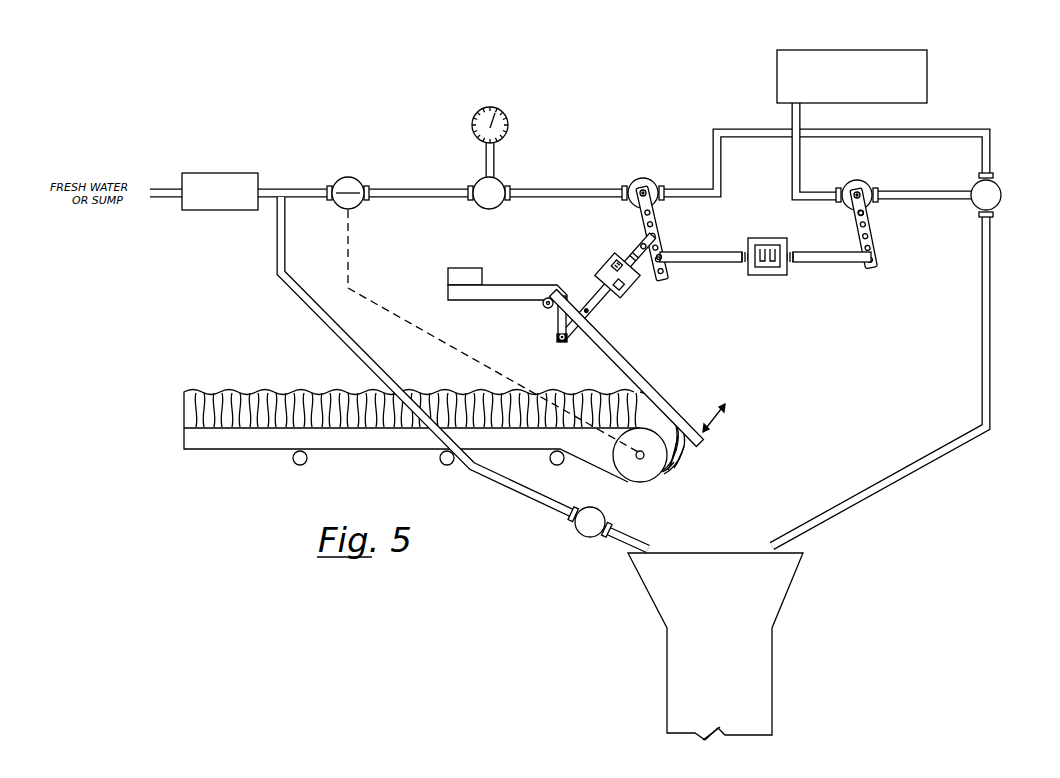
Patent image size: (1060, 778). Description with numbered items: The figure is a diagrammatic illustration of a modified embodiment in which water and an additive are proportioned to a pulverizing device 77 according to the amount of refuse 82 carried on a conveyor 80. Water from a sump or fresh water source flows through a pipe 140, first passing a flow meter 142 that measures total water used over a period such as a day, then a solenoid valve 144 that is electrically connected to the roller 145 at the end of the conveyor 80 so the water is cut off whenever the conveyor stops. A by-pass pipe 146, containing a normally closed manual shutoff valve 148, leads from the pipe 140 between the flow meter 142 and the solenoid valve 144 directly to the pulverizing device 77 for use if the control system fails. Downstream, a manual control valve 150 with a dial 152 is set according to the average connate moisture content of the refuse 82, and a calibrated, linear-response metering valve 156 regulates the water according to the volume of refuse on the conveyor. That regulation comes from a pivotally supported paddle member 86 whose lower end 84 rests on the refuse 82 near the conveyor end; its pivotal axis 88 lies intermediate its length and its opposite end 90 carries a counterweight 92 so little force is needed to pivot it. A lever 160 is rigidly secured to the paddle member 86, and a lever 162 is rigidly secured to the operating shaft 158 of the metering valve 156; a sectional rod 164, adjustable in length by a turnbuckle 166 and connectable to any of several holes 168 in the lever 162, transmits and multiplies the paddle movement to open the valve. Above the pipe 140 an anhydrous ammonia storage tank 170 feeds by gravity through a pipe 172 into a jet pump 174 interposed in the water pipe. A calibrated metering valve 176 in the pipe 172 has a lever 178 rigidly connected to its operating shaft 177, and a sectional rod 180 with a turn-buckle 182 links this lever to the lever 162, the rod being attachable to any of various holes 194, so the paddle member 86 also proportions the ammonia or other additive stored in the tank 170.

The pulverizing device 77 is at (644, 572).
The conveyor 80 is at (327, 450).
The refuse 82 is at (248, 400).
The lower end of paddle member 84 is at (703, 446).
The paddle member 86 is at (629, 362).
The pivotal axis 88 is at (543, 306).
The end of paddle member 90 is at (455, 300).
The counterweight 92 is at (468, 268).
The pipe 140 is at (165, 188).
The flow meter 142 is at (254, 180).
The solenoid valve 144 is at (354, 177).
The roller 145 is at (641, 478).
The by-pass pipe 146 is at (277, 264).
The manual shutoff valve 148 is at (578, 533).
The manual control valve 150 is at (497, 206).
The dial 152 is at (483, 107).
The metering valve 156 is at (656, 179).
The operating shaft 158 is at (642, 188).
The lever 160 is at (567, 296).
The lever 162 is at (666, 212).
The sectional rod 164 is at (642, 248).
The turnbuckle 166 is at (640, 288).
The holes 168 is at (670, 279).
The anhydrous ammonia storage tank 170 is at (879, 50).
The pipe 172 is at (792, 159).
The jet pump 174 is at (1003, 191).
The calibrated metering valve 176 is at (871, 183).
The operating shaft 177 is at (855, 192).
The lever 178 is at (874, 228).
The sectional rod 180 is at (716, 252).
The turn-buckle 182 is at (770, 275).
The holes 194 is at (856, 215).